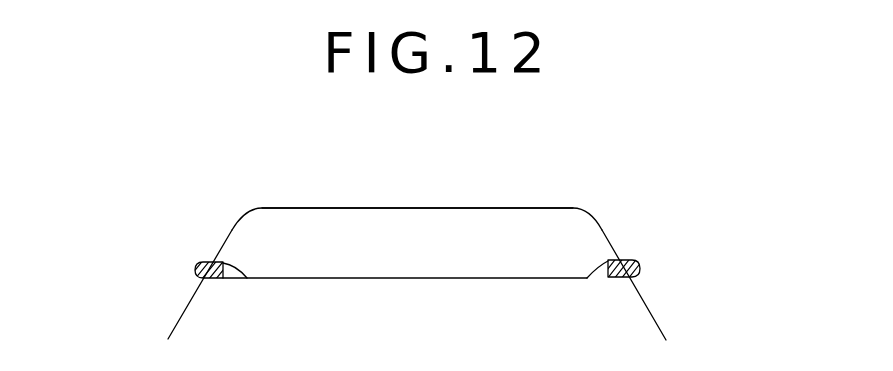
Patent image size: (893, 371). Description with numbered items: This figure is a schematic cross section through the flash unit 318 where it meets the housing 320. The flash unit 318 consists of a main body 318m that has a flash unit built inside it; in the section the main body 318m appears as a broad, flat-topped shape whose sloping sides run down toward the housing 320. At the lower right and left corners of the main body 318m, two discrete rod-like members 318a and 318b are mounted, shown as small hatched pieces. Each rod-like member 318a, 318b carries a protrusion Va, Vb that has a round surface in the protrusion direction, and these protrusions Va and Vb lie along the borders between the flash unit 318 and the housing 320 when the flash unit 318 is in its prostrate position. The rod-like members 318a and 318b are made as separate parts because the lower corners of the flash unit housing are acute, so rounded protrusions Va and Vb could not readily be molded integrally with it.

The flash unit 318 is at (606, 210).
The main body 318m is at (422, 228).
The rod-like member 318a is at (585, 277).
The rod-like member 318b is at (245, 278).
The housing 320 is at (661, 310).
The protrusion Va is at (649, 270).
The protrusion Vb is at (193, 265).